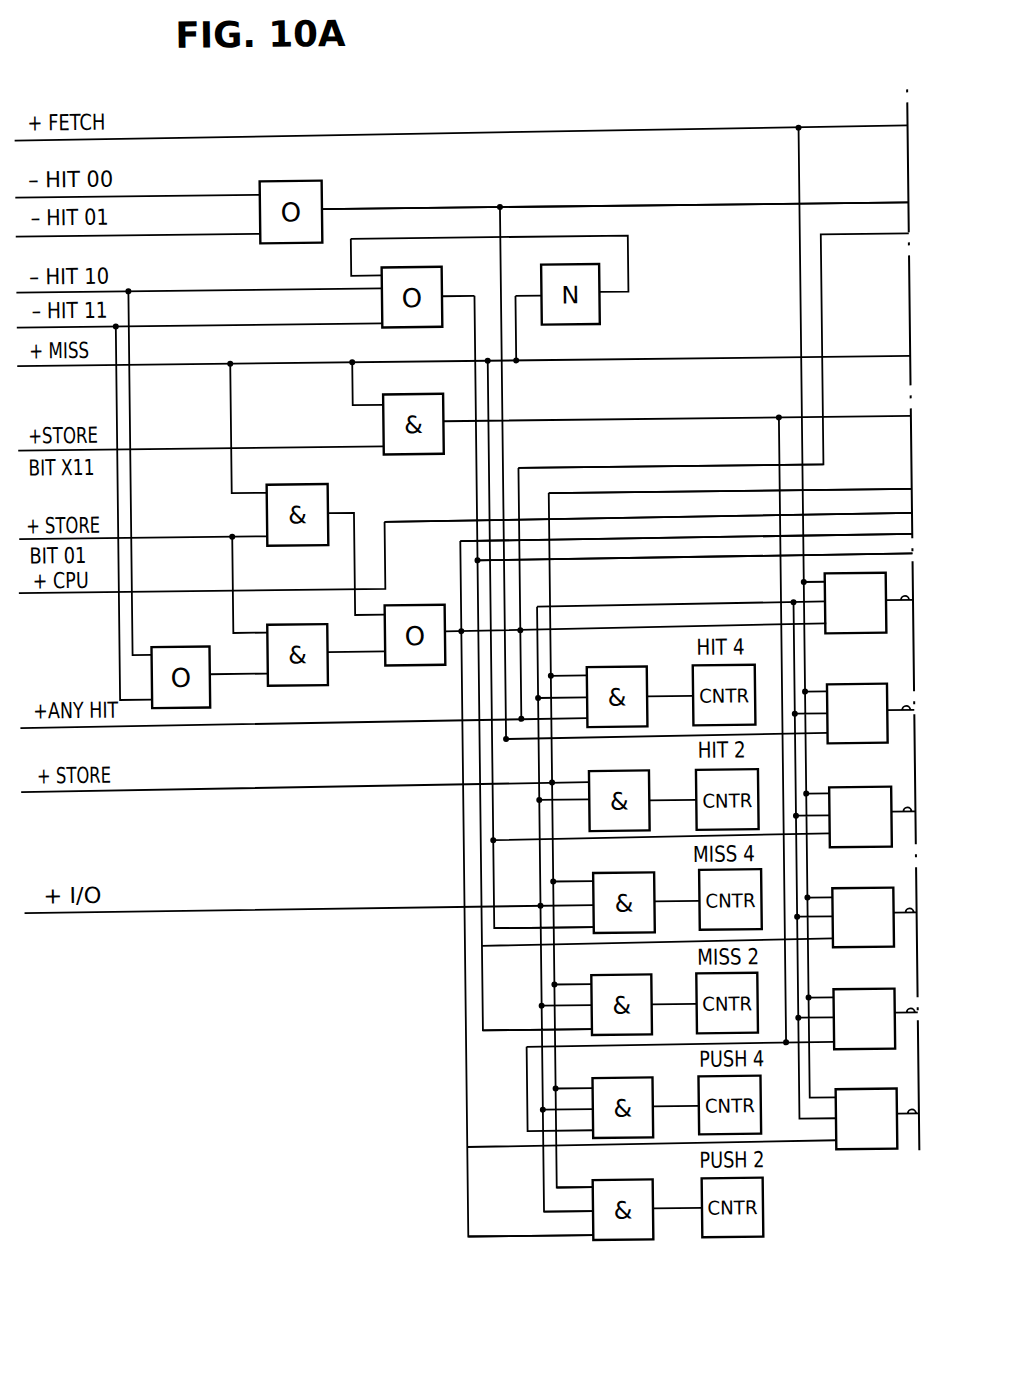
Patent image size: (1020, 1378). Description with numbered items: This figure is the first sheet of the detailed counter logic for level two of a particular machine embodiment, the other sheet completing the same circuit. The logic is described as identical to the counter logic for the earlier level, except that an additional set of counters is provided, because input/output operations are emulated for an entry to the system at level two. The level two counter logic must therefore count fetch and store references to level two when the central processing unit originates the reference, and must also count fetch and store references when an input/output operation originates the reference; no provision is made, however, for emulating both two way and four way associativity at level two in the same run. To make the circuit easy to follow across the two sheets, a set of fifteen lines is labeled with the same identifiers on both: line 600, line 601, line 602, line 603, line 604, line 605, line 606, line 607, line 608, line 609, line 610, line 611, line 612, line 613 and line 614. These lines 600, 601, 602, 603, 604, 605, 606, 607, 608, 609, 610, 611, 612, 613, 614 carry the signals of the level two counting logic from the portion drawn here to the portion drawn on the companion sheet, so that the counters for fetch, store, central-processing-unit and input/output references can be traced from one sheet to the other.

The line 600 is at (846, 129).
The line 601 is at (861, 207).
The line 602 is at (887, 238).
The line 603 is at (871, 360).
The line 604 is at (872, 420).
The line 605 is at (642, 520).
The line 606 is at (630, 540).
The line 607 is at (740, 558).
The line 608 is at (881, 494).
The line 609 is at (906, 606).
The line 610 is at (906, 720).
The line 611 is at (903, 822).
The line 612 is at (907, 924).
The line 613 is at (904, 1024).
The line 614 is at (906, 1125).